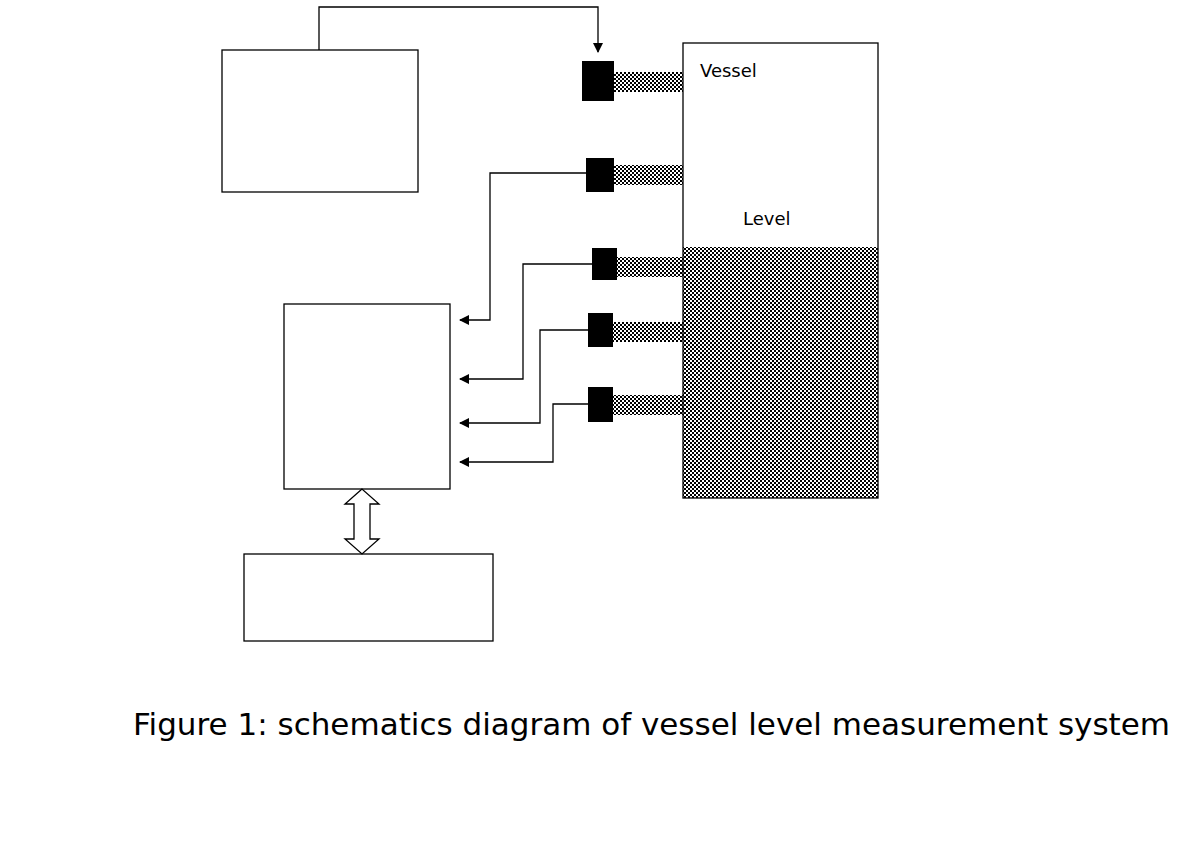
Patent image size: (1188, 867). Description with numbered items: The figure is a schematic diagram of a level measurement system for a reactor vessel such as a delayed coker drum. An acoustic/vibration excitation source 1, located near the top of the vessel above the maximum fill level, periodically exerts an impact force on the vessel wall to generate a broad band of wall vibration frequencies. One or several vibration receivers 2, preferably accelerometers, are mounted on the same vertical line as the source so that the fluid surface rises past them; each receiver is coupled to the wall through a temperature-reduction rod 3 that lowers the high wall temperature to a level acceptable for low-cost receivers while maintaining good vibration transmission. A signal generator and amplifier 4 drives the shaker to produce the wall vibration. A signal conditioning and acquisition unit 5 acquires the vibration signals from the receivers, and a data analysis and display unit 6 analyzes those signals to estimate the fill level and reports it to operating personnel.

The acoustic/vibration excitation source 1 is at (611, 81).
The vibration receivers 2 is at (571, 331).
The temperature-reduction rod 3 is at (571, 220).
The signal generator and amplifier 4 is at (410, 96).
The signal conditioning and acquisition unit 5 is at (367, 376).
The data analysis and display unit 6 is at (368, 577).